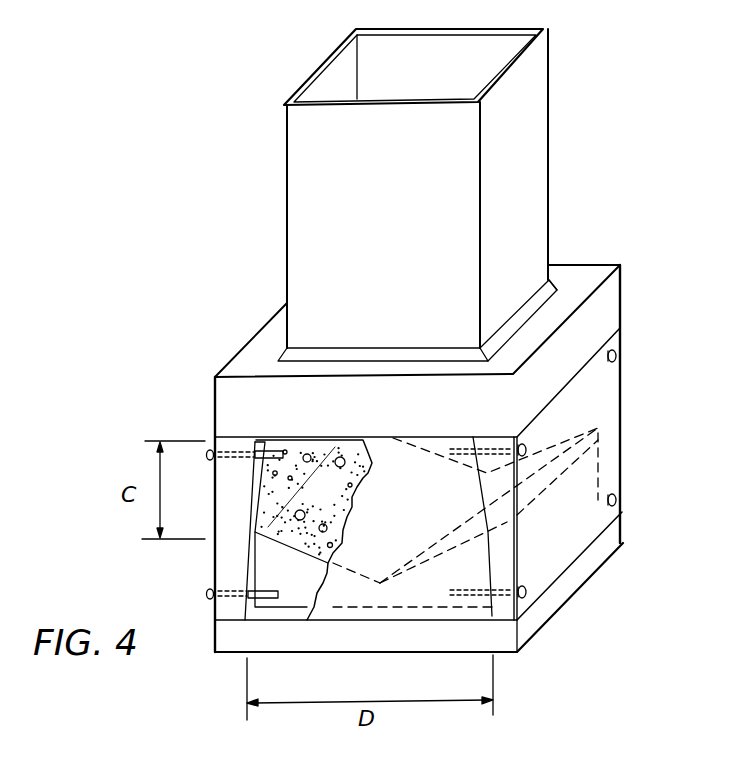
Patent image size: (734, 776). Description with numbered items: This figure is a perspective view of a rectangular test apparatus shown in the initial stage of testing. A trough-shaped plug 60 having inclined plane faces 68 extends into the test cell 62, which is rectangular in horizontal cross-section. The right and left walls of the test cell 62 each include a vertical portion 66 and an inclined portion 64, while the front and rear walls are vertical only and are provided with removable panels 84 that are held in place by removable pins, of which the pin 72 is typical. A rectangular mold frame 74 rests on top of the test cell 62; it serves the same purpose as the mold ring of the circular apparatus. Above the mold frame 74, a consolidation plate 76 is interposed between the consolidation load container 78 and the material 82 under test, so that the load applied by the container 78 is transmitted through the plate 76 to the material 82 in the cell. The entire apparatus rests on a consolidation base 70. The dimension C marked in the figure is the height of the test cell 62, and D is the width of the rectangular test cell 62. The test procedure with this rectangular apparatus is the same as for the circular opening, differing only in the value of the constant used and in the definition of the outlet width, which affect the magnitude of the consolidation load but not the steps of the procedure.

The trough-shaped plug 60 is at (287, 578).
The test cell 62 is at (215, 558).
The inclined portion 64 is at (255, 490).
The vertical portion 66 is at (253, 573).
The inclined plane faces 68 is at (393, 553).
The consolidation base 70 is at (238, 654).
The pin 72 is at (210, 455).
The rectangular mold frame 74 is at (238, 417).
The consolidation plate 76 is at (283, 352).
The consolidation load container 78 is at (305, 262).
The material under test 82 is at (314, 530).
The removable panels 84 is at (470, 555).